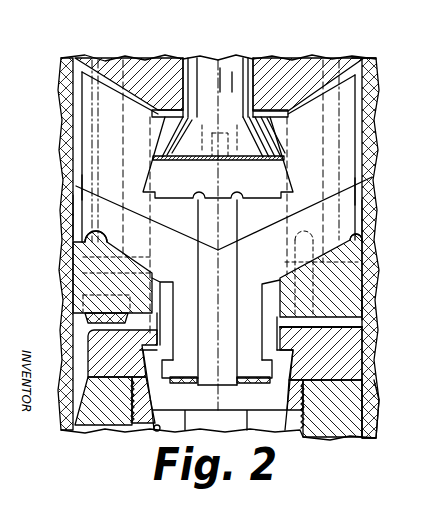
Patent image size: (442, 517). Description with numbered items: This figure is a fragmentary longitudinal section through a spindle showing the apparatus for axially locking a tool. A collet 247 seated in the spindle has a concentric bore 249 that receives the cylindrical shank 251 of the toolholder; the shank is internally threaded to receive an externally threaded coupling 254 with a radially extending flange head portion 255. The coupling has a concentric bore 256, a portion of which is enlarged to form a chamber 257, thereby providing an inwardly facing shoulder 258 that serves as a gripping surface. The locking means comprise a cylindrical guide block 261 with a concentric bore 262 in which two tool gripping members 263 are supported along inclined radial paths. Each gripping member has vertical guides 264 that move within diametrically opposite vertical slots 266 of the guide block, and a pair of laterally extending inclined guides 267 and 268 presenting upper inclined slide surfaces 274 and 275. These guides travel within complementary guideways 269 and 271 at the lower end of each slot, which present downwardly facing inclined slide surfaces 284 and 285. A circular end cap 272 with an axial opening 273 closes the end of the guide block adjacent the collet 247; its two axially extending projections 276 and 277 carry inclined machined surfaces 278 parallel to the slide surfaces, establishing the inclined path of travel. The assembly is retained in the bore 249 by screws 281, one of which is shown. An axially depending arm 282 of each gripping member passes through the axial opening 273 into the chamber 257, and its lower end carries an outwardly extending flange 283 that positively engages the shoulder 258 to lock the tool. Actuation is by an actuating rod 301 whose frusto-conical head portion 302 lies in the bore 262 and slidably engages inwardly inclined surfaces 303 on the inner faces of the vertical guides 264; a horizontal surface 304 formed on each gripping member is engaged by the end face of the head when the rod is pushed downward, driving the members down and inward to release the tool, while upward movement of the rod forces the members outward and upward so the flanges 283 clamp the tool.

The collet 247 is at (368, 393).
The concentric bore 249 is at (370, 62).
The cylindrical shank 251 is at (316, 432).
The coupling 254 is at (140, 430).
The flange head portion 255 is at (328, 372).
The concentric bore 256 is at (156, 431).
The chamber 257 is at (288, 372).
The inwardly facing shoulder 258 is at (311, 336).
The guide block 261 is at (288, 63).
The concentric bore 262 is at (157, 100).
The tool gripping members 263 is at (76, 132).
The vertical guides 264 is at (86, 105).
The vertical slots 266 is at (76, 78).
The angularly inclined guide 267 is at (80, 203).
The angularly inclined guide 268 is at (348, 207).
The guideway 269 is at (364, 232).
The guideway 271 is at (82, 223).
The circular end cap 272 is at (358, 303).
The axial opening 273 is at (276, 290).
The inclined slide surface 274 is at (88, 160).
The inclined slide surface 275 is at (360, 172).
The axially extending projection 276 is at (354, 270).
The axially extending projection 277 is at (76, 263).
The inclined machined surfaces 278 is at (78, 240).
The screws 281 is at (72, 322).
The depending arm 282 is at (162, 283).
The flange 283 is at (237, 378).
The inclined slide surface 284 is at (352, 190).
The inclined slide surface 285 is at (86, 190).
The actuating rod 301 is at (213, 70).
The frusto-conical head portion 302 is at (192, 162).
The inclined surfaces 303 is at (165, 125).
The horizontal surface 304 is at (202, 210).